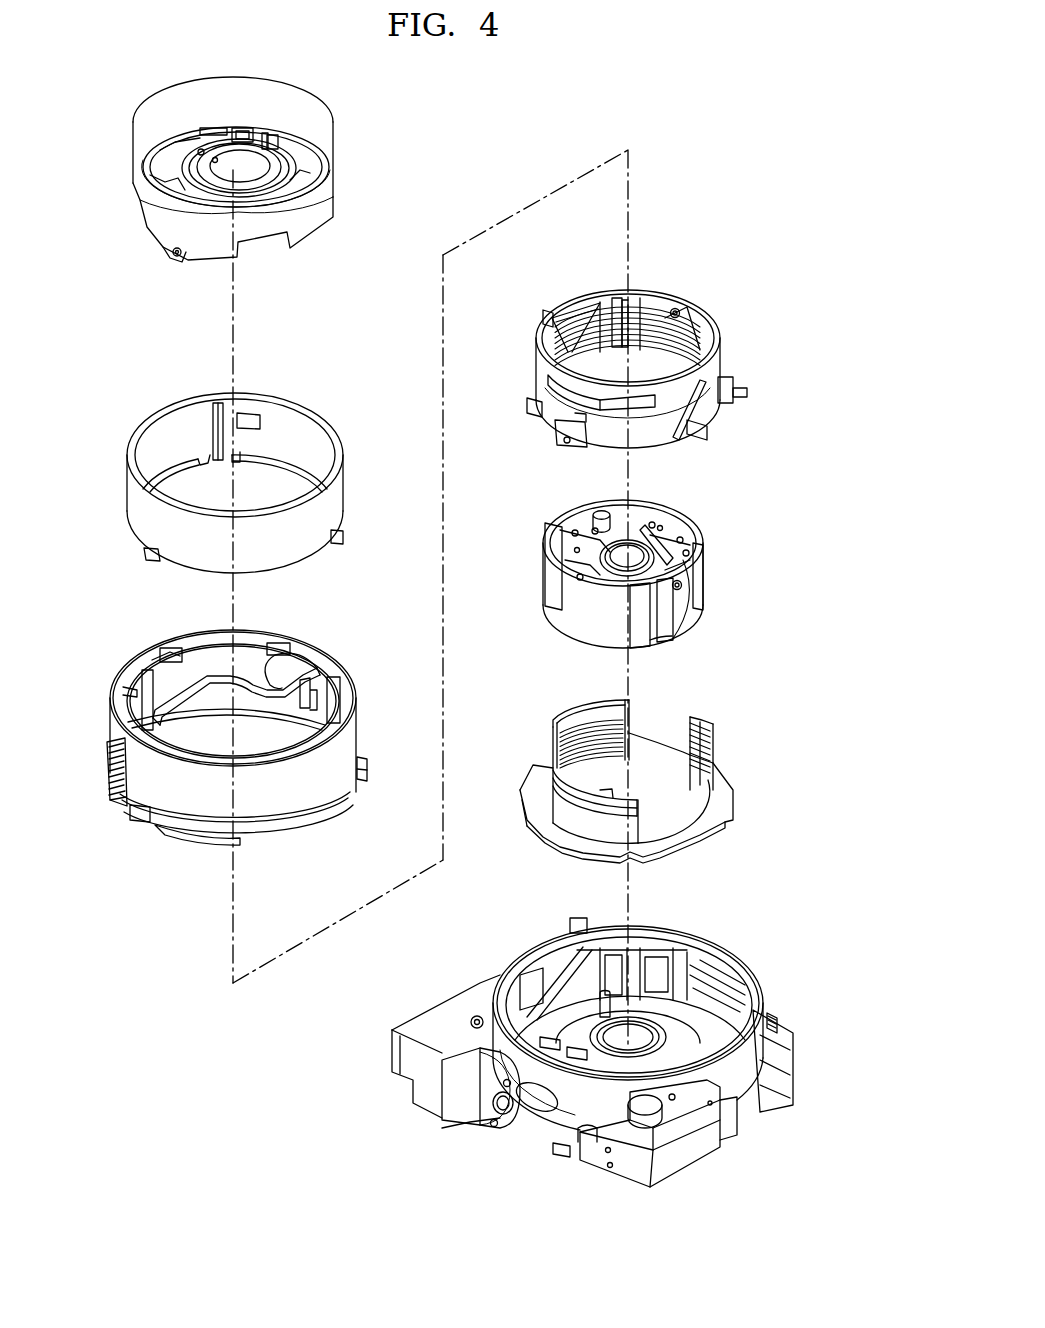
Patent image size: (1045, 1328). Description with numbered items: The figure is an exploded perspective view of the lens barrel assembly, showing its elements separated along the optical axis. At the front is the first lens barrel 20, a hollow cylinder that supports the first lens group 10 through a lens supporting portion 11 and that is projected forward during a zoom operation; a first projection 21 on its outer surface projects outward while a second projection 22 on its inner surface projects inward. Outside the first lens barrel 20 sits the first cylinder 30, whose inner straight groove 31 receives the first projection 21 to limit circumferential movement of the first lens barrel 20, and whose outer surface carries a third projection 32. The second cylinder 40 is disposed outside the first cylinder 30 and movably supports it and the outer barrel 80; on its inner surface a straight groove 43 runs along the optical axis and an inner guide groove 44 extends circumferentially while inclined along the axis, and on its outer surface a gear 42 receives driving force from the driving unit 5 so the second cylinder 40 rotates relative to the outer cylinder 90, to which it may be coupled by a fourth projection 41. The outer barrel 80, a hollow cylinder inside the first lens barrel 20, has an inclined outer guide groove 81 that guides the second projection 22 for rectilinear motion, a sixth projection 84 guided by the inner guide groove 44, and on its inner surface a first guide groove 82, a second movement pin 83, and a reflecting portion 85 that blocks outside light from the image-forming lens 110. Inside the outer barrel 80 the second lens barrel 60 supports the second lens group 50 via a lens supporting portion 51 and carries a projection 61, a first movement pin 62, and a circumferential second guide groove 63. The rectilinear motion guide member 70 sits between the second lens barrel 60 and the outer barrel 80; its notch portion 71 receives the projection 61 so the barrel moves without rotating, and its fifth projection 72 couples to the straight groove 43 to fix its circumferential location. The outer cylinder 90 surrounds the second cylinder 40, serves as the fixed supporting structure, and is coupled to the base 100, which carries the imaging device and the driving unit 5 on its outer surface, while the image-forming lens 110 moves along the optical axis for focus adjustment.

The driving unit 5 is at (470, 1107).
The first lens group 10 is at (205, 162).
The lens supporting portion 11 is at (212, 187).
The first lens barrel 20 is at (259, 196).
The first projection 21 is at (275, 137).
The second projection 22 is at (180, 256).
The first cylinder 30 is at (189, 491).
The straight groove 31 is at (213, 420).
The third projection 32 is at (148, 555).
The second cylinder 40 is at (243, 767).
The fourth projection 41 is at (362, 760).
The gear 42 is at (113, 793).
The straight groove 43 is at (153, 663).
The inner guide groove 44 is at (262, 676).
The second lens group 50 is at (630, 557).
The lens supporting portion 51 is at (667, 560).
The second lens barrel 60 is at (683, 576).
The projection 61 is at (647, 623).
The first movement pin 62 is at (681, 588).
The second guide groove 63 is at (663, 637).
The rectilinear motion guide member 70 is at (661, 791).
The notch portion 71 is at (667, 818).
The fifth projection 72 is at (542, 838).
The outer barrel 80 is at (643, 345).
The outer guide groove 81 is at (550, 391).
The first guide groove 82 is at (603, 317).
The second movement pin 83 is at (676, 308).
The sixth projection 84 is at (562, 435).
The reflecting portion 85 is at (645, 310).
The outer cylinder 90 is at (614, 1051).
The base 100 is at (603, 1163).
The image-forming lens 110 is at (640, 1043).